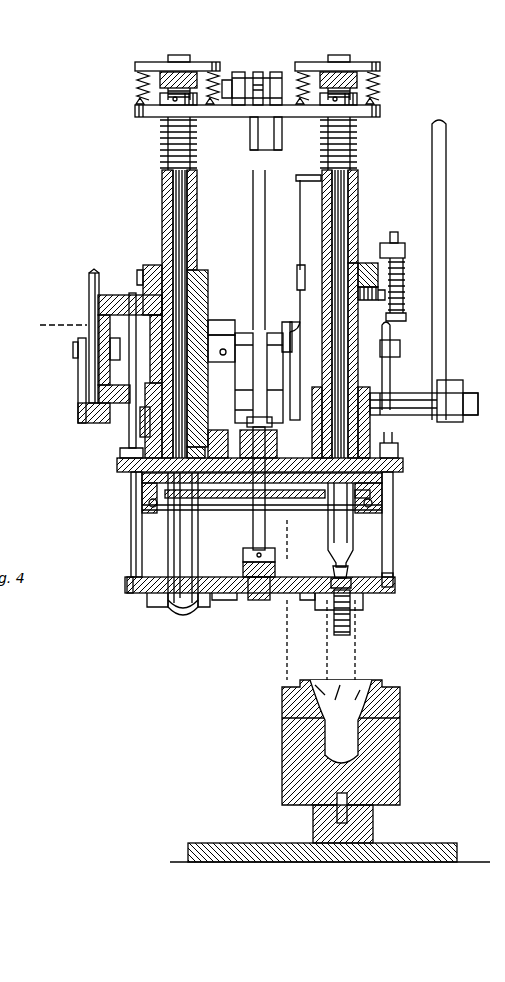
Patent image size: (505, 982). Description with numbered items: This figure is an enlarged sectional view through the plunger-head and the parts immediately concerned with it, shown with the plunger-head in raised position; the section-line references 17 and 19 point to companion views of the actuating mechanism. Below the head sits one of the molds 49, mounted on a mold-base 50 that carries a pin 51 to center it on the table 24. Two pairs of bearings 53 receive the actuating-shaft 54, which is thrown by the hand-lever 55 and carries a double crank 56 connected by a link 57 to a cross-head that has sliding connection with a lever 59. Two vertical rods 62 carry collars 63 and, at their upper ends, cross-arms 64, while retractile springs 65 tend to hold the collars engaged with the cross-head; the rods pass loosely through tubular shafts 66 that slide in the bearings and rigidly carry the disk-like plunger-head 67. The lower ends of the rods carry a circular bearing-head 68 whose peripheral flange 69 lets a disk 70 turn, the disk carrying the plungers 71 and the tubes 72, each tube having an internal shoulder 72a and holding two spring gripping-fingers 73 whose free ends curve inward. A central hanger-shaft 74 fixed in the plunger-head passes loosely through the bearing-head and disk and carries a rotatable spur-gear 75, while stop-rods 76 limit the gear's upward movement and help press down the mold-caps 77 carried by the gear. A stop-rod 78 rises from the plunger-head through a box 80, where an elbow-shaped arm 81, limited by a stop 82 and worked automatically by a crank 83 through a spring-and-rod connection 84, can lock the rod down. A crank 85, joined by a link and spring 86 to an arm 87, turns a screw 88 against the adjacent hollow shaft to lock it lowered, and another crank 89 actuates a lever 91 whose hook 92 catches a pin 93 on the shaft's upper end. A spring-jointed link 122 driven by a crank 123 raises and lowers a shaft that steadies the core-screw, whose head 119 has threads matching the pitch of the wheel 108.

The sheet figure reference 17 is at (280, 428).
The sheet figure reference 19 is at (52, 325).
The table 24 is at (452, 843).
The mold 49 is at (400, 771).
The mold-base 50 is at (373, 831).
The pin 51 is at (347, 801).
The bearing 53 is at (150, 265).
The actuating-shaft 54 is at (405, 400).
The hand-lever 55 is at (446, 238).
The double crank 56 is at (285, 322).
The link 57 is at (266, 262).
The lever 59 is at (258, 72).
The vertical rod 62 is at (175, 185).
The collar 63 is at (165, 99).
The cross-arm 64 is at (135, 65).
The retractile spring 65 is at (138, 86).
The tubular shaft 66 is at (198, 250).
The plunger-head 67 is at (403, 465).
The bearing-head 68 is at (380, 110).
The peripheral flange 69 is at (380, 503).
The disk 70 is at (299, 540).
The plunger 71 is at (198, 542).
The tube 72 is at (328, 548).
The internal shoulder 72a is at (395, 585).
The spring gripping-finger 73 is at (345, 556).
The hanger-shaft 74 is at (253, 515).
The spur-gear 75 is at (213, 604).
The stop-rod 76 is at (131, 536).
The mold-cap 77 is at (157, 603).
The stop-rod 78 is at (129, 432).
The box 80 is at (112, 295).
The arm 81 is at (220, 335).
The stop 82 is at (80, 365).
The crank 83 is at (235, 420).
The spring-and-rod connection 84 is at (240, 333).
The crank 85 is at (393, 365).
The link and spring 86 is at (405, 308).
The arm 87 is at (405, 250).
The screw 88 is at (381, 340).
The crank 89 is at (292, 362).
The lever 91 is at (298, 290).
The hook 92 is at (302, 265).
The pin 93 is at (300, 181).
The wheel 108 is at (350, 627).
The head 119 is at (350, 573).
The spring-jointed link 122 is at (89, 289).
The crank 123 is at (100, 370).